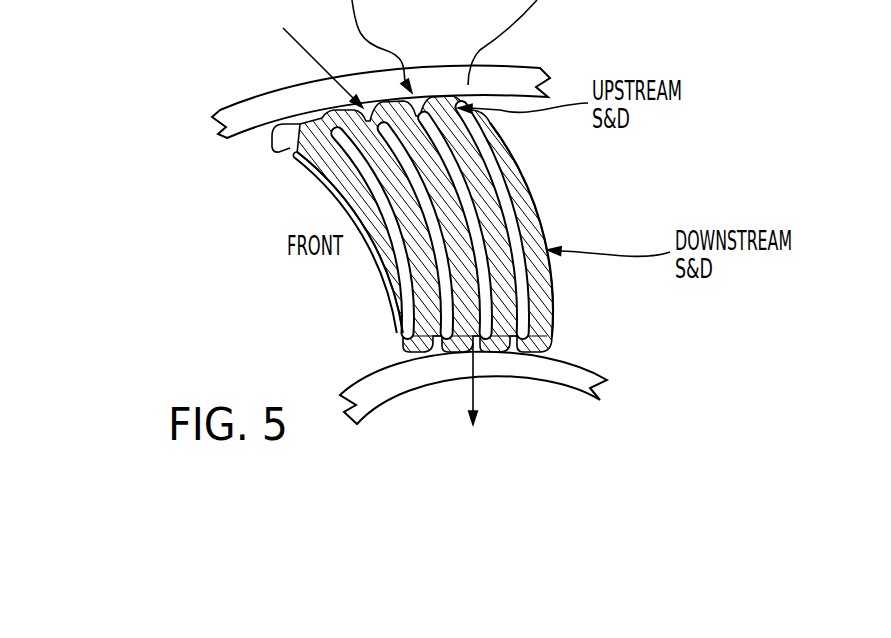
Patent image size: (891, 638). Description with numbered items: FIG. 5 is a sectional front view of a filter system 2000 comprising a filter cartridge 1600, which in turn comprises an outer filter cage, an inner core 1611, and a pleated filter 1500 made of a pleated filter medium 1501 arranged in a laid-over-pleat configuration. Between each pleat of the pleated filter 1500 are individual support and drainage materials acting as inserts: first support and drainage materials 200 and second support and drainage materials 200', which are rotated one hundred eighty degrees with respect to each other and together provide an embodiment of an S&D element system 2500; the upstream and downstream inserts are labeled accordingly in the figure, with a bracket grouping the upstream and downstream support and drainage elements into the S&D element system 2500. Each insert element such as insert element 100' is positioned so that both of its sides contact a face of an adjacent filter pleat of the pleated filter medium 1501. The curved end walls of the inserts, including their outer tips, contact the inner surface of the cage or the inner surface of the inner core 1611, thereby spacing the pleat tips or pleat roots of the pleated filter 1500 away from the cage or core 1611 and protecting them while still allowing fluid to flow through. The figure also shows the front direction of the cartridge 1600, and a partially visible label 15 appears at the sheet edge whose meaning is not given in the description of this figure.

The first support and drainage material 200 is at (516, 181).
The second support and drainage material 200' is at (489, 224).
The insert element 100' is at (554, 361).
The pleated filter medium 1501 is at (535, 217).
The pleated filter 1500 is at (395, 333).
The filter cartridge 1600 is at (375, 270).
The inner core 1611 is at (553, 375).
The filter system 2000 is at (217, 211).
The S&D element system 2500 is at (610, 38).
The turbine component 15 is at (882, 96).